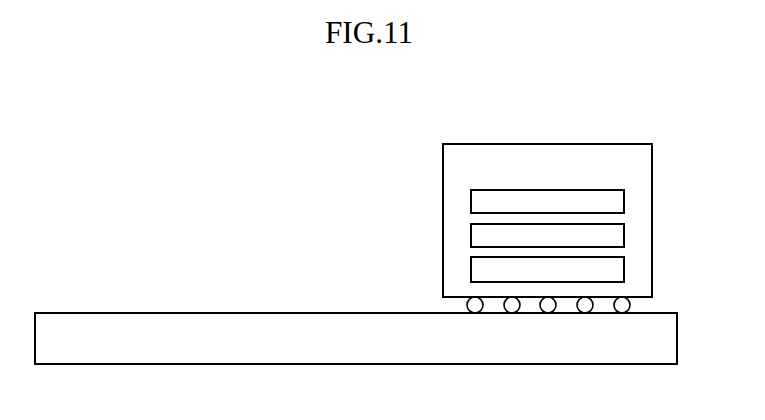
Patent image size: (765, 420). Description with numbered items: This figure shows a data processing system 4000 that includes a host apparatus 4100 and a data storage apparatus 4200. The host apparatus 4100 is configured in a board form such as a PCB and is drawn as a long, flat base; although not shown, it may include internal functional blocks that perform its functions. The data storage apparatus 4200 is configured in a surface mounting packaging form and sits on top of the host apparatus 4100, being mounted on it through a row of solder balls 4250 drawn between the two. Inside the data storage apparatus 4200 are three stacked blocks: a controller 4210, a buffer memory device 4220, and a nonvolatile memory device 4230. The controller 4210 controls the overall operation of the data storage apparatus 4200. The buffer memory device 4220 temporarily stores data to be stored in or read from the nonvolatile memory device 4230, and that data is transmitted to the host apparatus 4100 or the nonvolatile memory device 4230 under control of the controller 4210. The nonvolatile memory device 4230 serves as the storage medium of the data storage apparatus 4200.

The data processing system 4000 is at (90, 91).
The host apparatus 4100 is at (356, 338).
The data storage apparatus 4200 is at (547, 220).
The controller 4210 is at (547, 203).
The buffer memory device 4220 is at (547, 237).
The nonvolatile memory device 4230 is at (547, 271).
The solder ball 4250 is at (640, 304).